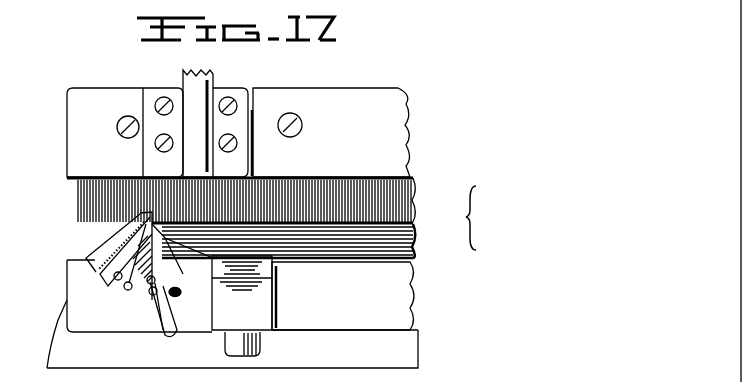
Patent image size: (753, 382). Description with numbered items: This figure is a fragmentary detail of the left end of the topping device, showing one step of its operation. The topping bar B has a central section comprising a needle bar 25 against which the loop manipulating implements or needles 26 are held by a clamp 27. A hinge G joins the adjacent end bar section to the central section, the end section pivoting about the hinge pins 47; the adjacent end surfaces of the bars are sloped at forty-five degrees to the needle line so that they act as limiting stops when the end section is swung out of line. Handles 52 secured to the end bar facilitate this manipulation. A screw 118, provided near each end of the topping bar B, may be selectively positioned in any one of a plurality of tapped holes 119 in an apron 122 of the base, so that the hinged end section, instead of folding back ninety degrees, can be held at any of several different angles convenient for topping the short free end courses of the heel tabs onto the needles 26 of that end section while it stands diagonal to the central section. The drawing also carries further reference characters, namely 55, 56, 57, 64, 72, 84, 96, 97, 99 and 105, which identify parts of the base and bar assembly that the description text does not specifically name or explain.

The needle bar 25 is at (416, 257).
The loop manipulating implements 26 is at (416, 222).
The clamp 27 is at (416, 206).
The hinge pins 47 is at (112, 227).
The handles 52 is at (132, 296).
The screws 55 is at (86, 259).
The base 56 is at (416, 352).
The bolt 57 is at (262, 346).
The shaft 64 is at (208, 84).
The cover plate 72 is at (338, 92).
The side plate 84 is at (272, 292).
The bar 96 is at (150, 92).
The bar 97 is at (231, 136).
The brush 99 is at (415, 179).
The screws 105 is at (120, 132).
The screws 118 is at (133, 298).
The tapped holes 119 is at (180, 294).
The apron 122 is at (118, 324).
The topping bar B is at (481, 218).
The hinge G is at (160, 236).